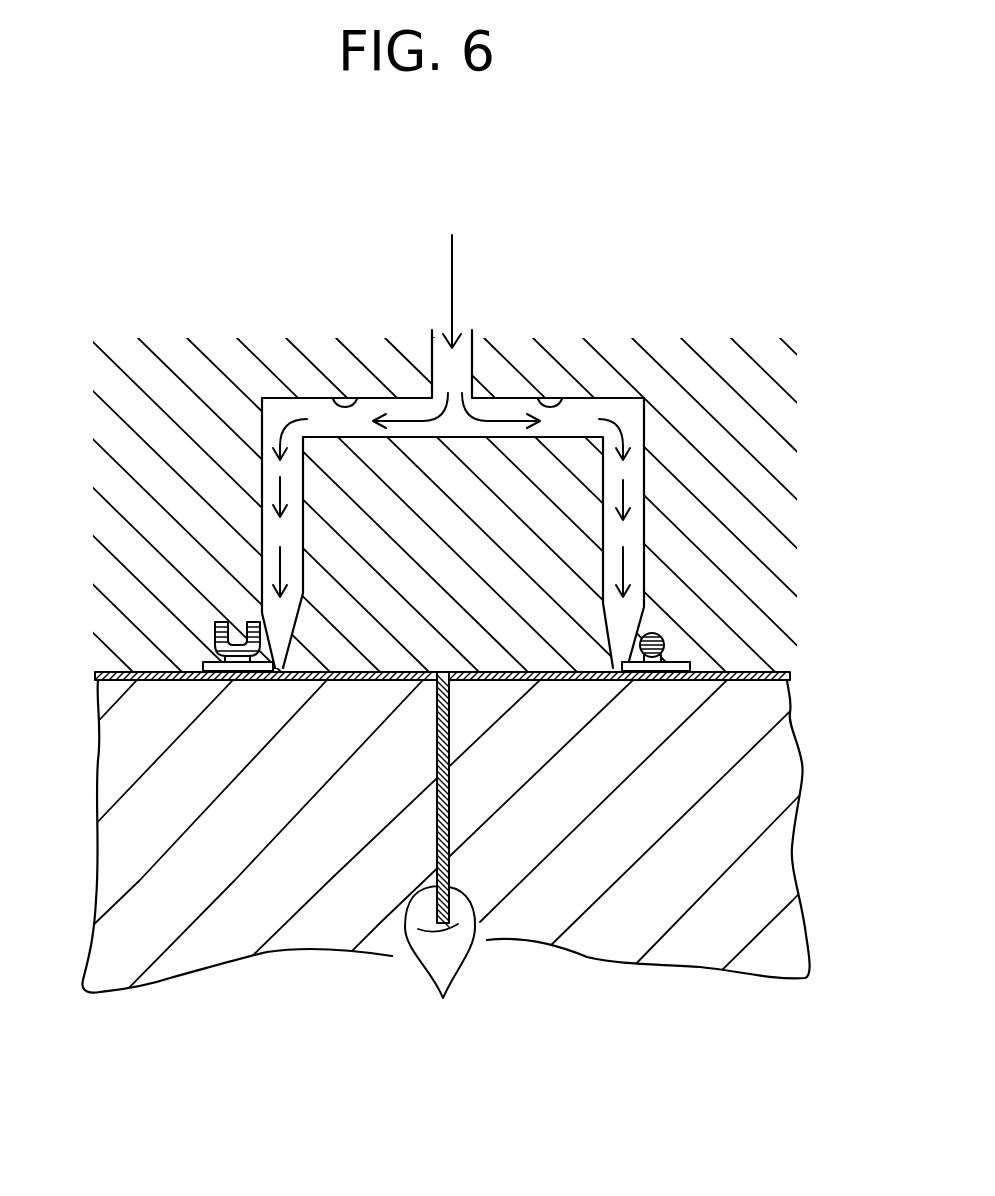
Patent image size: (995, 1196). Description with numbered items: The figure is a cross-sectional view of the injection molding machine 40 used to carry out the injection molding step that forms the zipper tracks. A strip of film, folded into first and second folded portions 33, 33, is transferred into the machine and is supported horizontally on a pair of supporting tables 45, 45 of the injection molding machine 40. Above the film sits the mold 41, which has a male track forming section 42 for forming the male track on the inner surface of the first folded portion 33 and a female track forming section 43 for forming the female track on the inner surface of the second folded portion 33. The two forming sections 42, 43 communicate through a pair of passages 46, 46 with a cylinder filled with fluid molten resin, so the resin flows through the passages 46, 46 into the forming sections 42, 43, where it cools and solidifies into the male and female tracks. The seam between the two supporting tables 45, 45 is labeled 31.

The crack 31 is at (440, 856).
The folded portion 33 is at (153, 670).
The injection molding machine 40 is at (165, 275).
The mold 41 is at (664, 304).
The male track forming section 42 is at (667, 637).
The female track forming section 43 is at (237, 667).
The supporting table 45 is at (222, 867).
The passage 46 is at (350, 397).